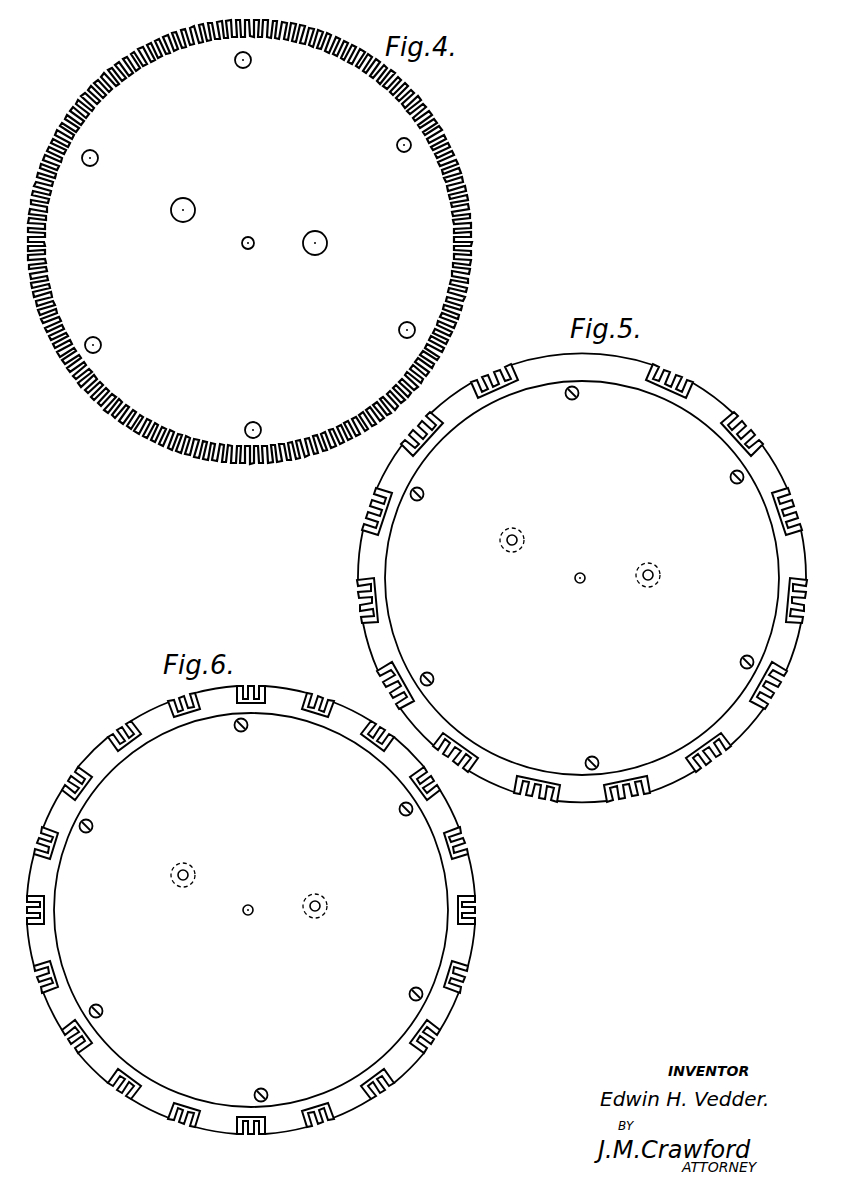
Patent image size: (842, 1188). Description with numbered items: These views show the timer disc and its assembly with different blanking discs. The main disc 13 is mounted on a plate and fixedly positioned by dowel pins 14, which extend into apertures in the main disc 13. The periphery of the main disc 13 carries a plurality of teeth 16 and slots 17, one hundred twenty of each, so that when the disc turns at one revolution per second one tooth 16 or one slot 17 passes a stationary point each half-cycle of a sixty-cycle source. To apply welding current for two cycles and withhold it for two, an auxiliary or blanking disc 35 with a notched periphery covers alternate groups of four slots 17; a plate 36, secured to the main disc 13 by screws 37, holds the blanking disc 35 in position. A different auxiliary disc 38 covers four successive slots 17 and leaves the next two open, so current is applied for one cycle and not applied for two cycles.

In FIG. 4, the main disc 13 is at (267, 242).
In FIG. 5, the dowel pins 14 is at (517, 540).
In FIG. 6, the dowel pins 14 is at (187, 870).
In FIG. 4, the teeth 16 is at (267, 242).
In FIG. 5, the teeth 16 is at (582, 574).
In FIG. 6, the teeth 16 is at (263, 904).
In FIG. 4, the slots 17 is at (462, 206).
In FIG. 5, the slots 17 is at (668, 378).
In FIG. 6, the slots 17 is at (456, 846).
In FIG. 5, the auxiliary or blanking disc 35 is at (716, 404).
In FIG. 5, the plate 36 is at (697, 440).
In FIG. 6, the plate 36 is at (427, 892).
In FIG. 5, the screws 37 is at (745, 478).
In FIG. 6, the screws 37 is at (413, 810).
In FIG. 6, the auxiliary disc 38 is at (458, 866).